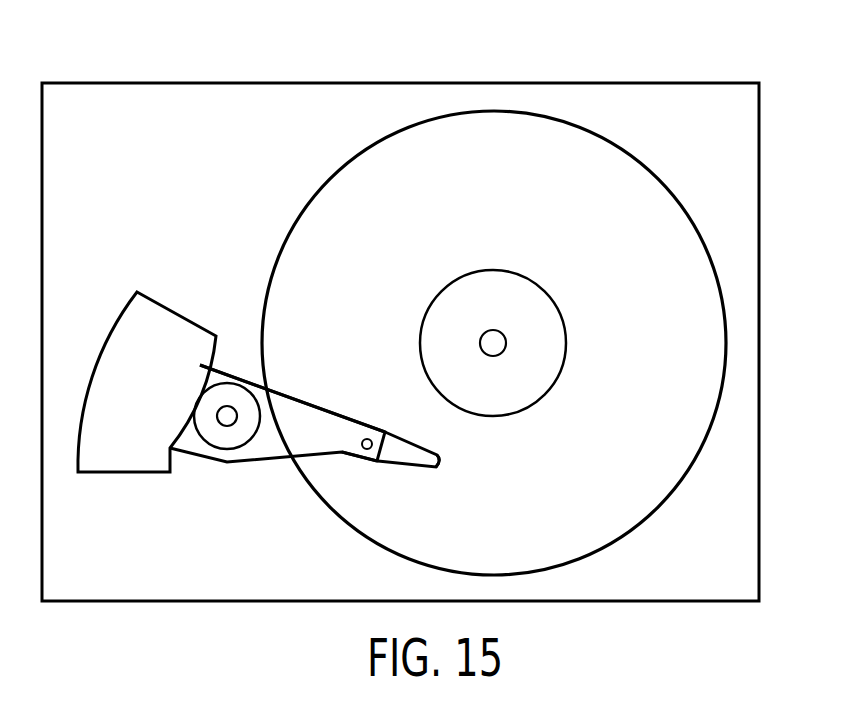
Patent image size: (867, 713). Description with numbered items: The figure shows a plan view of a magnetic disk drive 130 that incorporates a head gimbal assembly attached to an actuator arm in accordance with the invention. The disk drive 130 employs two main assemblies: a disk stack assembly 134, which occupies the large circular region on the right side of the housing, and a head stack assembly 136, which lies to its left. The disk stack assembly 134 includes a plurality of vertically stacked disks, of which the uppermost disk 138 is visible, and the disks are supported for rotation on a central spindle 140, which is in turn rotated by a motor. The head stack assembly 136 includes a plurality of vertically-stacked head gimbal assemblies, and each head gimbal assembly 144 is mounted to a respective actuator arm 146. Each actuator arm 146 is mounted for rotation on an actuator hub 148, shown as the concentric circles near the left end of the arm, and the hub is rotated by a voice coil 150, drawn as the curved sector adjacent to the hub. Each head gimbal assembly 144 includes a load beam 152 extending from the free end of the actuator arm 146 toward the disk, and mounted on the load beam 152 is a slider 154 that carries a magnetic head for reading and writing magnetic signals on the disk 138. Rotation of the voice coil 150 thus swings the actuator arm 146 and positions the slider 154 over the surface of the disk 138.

The disk drive 130 is at (610, 68).
The disk stack assembly 134 is at (636, 160).
The head stack assembly 136 is at (345, 420).
The disk 138 is at (655, 343).
The spindle 140 is at (497, 330).
The head gimbal assembly 144 is at (399, 464).
The actuator arm 146 is at (295, 400).
The actuator hub 148 is at (233, 435).
The voice coil 150 is at (167, 309).
The load beam 152 is at (415, 446).
The slider 154 is at (442, 462).